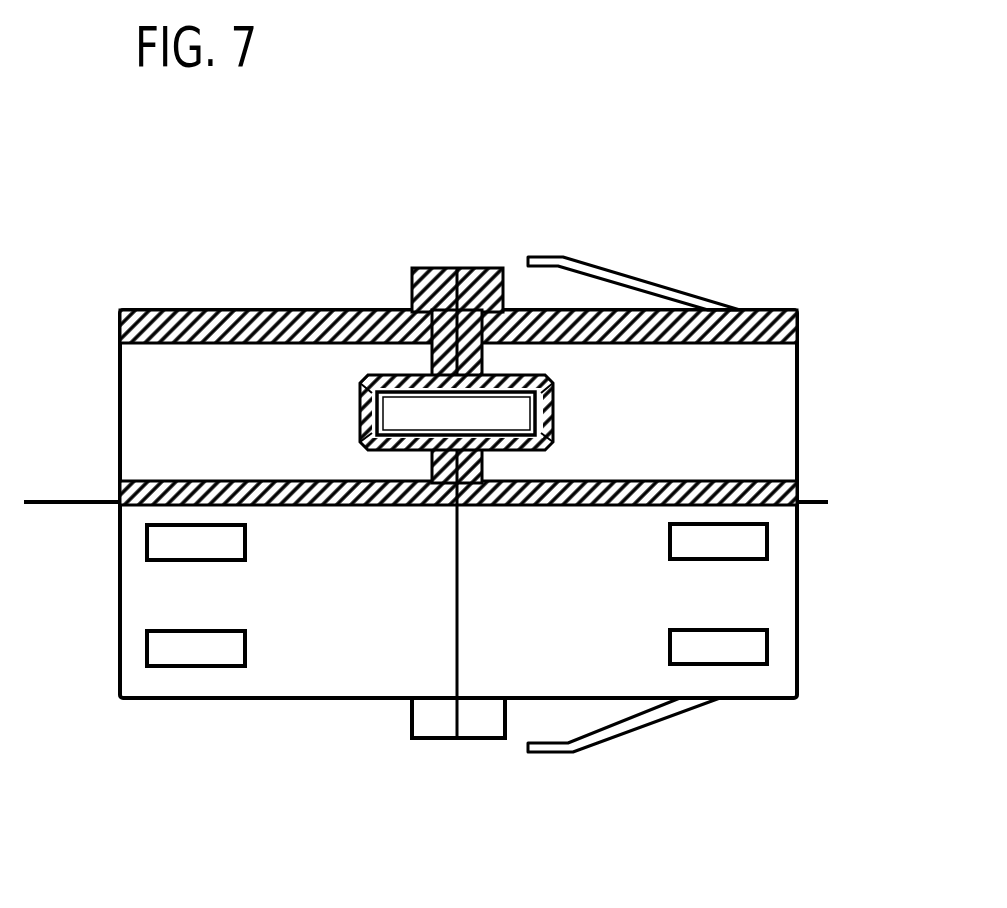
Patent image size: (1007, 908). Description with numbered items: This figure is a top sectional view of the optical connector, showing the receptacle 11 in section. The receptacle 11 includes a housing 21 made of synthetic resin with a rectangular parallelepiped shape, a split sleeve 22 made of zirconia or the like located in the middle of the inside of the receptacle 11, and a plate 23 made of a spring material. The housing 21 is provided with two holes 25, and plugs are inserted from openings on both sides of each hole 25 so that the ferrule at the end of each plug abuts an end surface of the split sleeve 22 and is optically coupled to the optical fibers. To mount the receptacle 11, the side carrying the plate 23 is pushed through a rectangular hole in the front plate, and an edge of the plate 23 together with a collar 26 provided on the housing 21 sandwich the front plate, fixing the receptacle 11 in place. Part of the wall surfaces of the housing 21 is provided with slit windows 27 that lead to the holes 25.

The receptacle 11 is at (470, 144).
The housing 21 is at (790, 310).
The split sleeve 22 is at (397, 407).
The plate 23 is at (598, 264).
The hole 25 is at (775, 400).
The collar 26 is at (474, 268).
The slit window 27 is at (178, 652).